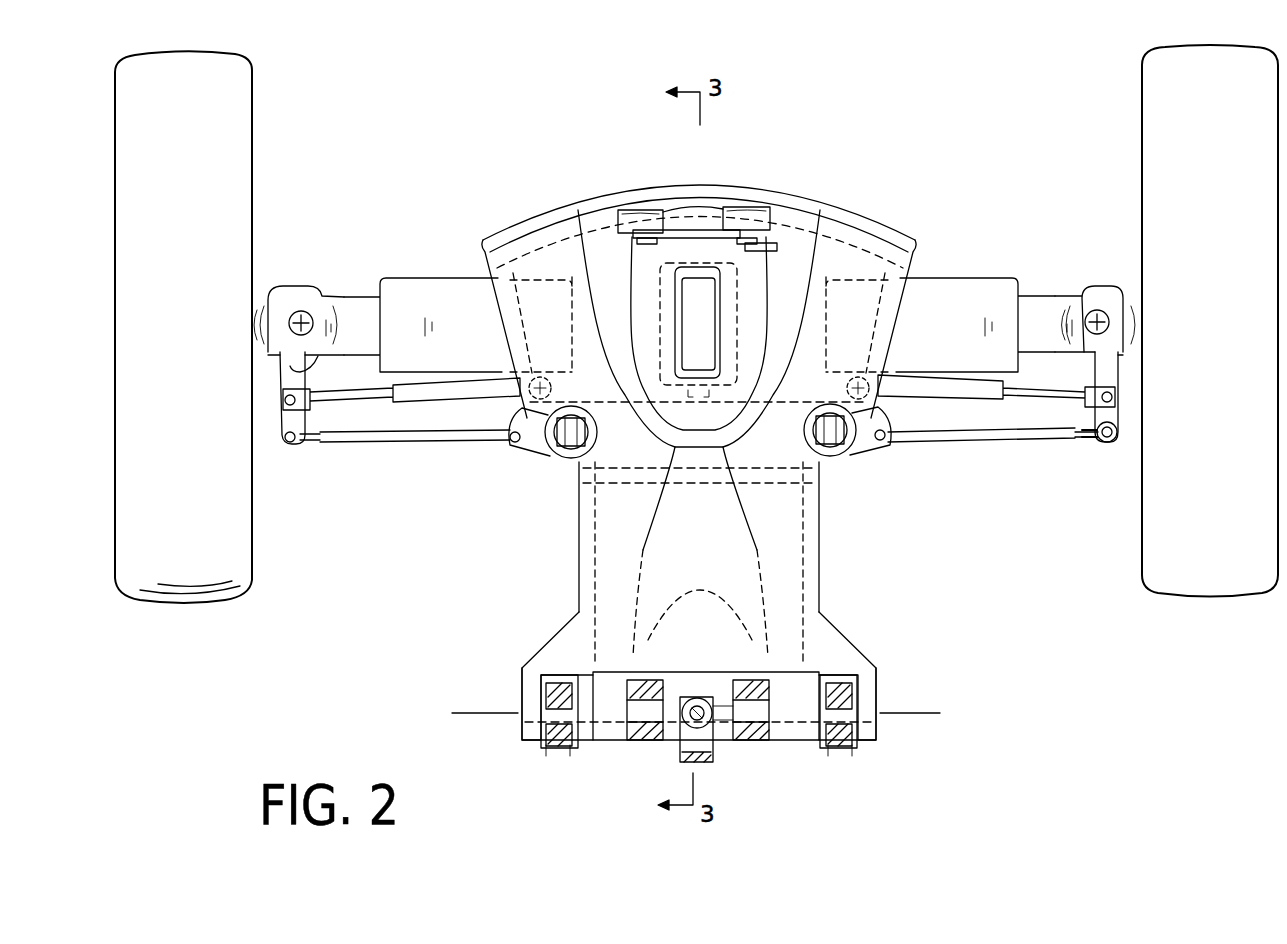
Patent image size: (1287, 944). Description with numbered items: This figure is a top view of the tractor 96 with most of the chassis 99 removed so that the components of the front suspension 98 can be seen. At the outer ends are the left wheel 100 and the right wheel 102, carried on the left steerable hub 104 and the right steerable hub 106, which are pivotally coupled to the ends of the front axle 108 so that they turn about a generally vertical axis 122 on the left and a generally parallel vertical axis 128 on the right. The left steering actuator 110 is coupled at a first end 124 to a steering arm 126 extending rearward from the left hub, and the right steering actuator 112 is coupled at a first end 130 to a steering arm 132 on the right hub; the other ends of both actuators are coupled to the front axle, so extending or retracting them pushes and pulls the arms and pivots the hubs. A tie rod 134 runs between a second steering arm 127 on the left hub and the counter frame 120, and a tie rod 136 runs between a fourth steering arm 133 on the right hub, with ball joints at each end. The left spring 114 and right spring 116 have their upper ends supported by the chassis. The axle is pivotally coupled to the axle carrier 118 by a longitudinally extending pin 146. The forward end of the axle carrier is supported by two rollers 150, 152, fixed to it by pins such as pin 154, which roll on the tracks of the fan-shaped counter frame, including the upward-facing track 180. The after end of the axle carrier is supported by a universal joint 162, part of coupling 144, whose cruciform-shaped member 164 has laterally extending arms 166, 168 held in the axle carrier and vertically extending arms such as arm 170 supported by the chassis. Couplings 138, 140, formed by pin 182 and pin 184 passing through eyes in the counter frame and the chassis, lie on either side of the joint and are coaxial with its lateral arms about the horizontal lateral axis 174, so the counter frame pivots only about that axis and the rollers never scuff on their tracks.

The tractor 96 is at (860, 118).
The front suspension 98 is at (503, 171).
The chassis 99 is at (556, 748).
The left wheel 100 is at (253, 146).
The right wheel 102 is at (1141, 132).
The left steerable hub 104 is at (294, 285).
The right steerable hub 106 is at (1093, 284).
The front axle 108 is at (360, 296).
The left steering actuator 110 is at (462, 384).
The right steering actuator 112 is at (930, 390).
The left spring 114 is at (562, 452).
The right spring 116 is at (830, 456).
The axle carrier 118 is at (760, 244).
The counter frame 120 is at (820, 583).
The vertical axis 122 is at (309, 316).
The first end 124 is at (304, 448).
The steering arm 126 is at (312, 373).
The second steering arm 127 is at (288, 452).
The vertical axis 128 is at (1088, 314).
The first end 130 is at (1083, 434).
The steering arm 132 is at (1112, 373).
The fourth steering arm 133 is at (1105, 444).
The tie rod 134 is at (447, 453).
The tie rod 136 is at (888, 448).
The coupling 138 is at (465, 661).
The coupling 140 is at (902, 664).
The coupling 144 is at (668, 615).
The pin 146 is at (700, 268).
The roller 150 is at (633, 216).
The roller 152 is at (752, 212).
The pin 154 is at (636, 208).
The universal joint 162 is at (710, 691).
The cruciform-shaped member 164 is at (765, 715).
The laterally extending arm 166 is at (637, 715).
The laterally extending arm 168 is at (723, 714).
The vertically extending arm 170 is at (692, 697).
The lateral axis 174 is at (512, 700).
The track 180 is at (691, 212).
The pin 182 is at (571, 718).
The pin 184 is at (855, 730).